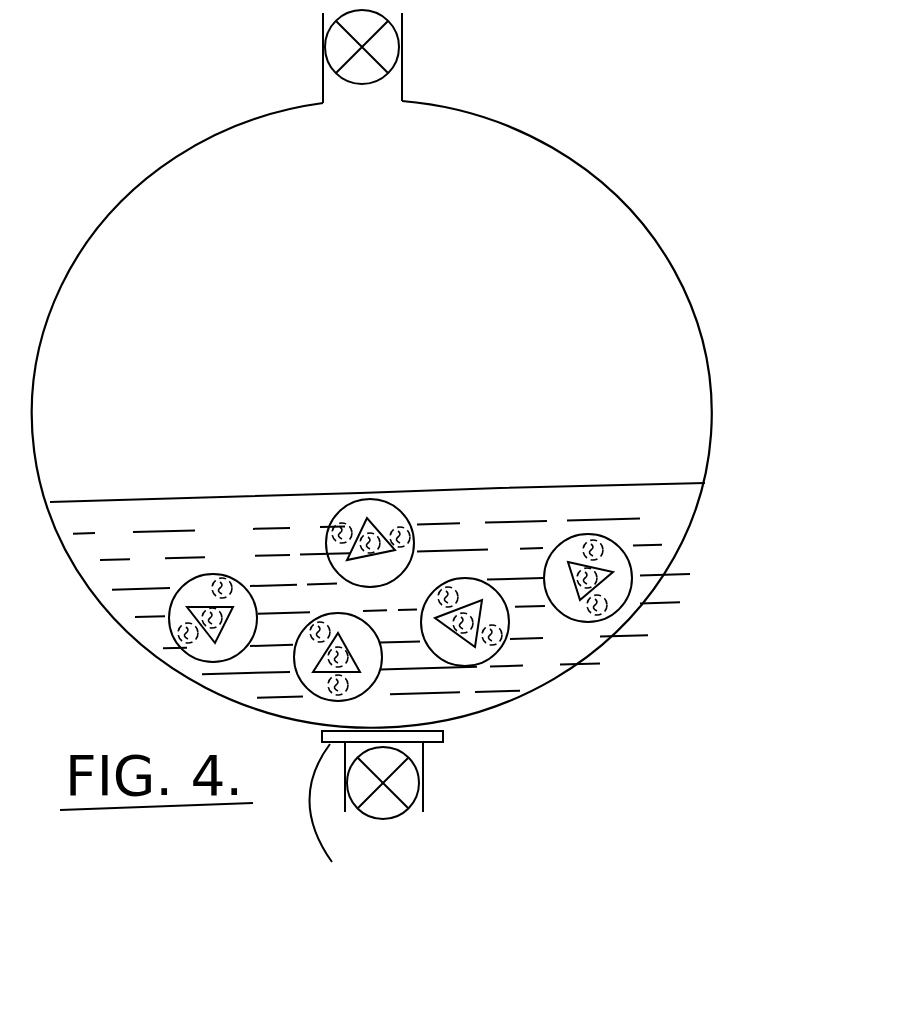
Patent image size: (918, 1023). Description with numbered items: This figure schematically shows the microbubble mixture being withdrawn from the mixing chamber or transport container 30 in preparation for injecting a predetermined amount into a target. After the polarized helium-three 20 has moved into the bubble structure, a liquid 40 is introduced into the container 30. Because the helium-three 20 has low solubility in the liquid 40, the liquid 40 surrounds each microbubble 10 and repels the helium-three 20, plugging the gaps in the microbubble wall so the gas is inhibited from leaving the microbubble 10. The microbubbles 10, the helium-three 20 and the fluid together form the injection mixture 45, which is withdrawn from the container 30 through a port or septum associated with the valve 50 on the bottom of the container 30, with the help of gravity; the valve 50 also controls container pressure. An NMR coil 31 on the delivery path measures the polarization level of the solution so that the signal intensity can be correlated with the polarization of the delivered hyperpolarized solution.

The microbubble 10 is at (203, 577).
The polarized helium-3 20 is at (318, 622).
The container 30 is at (602, 178).
The NMR coil 31 is at (443, 735).
The liquid 40 is at (595, 485).
The injection mixture 45 is at (637, 518).
The valve 50 is at (393, 70).